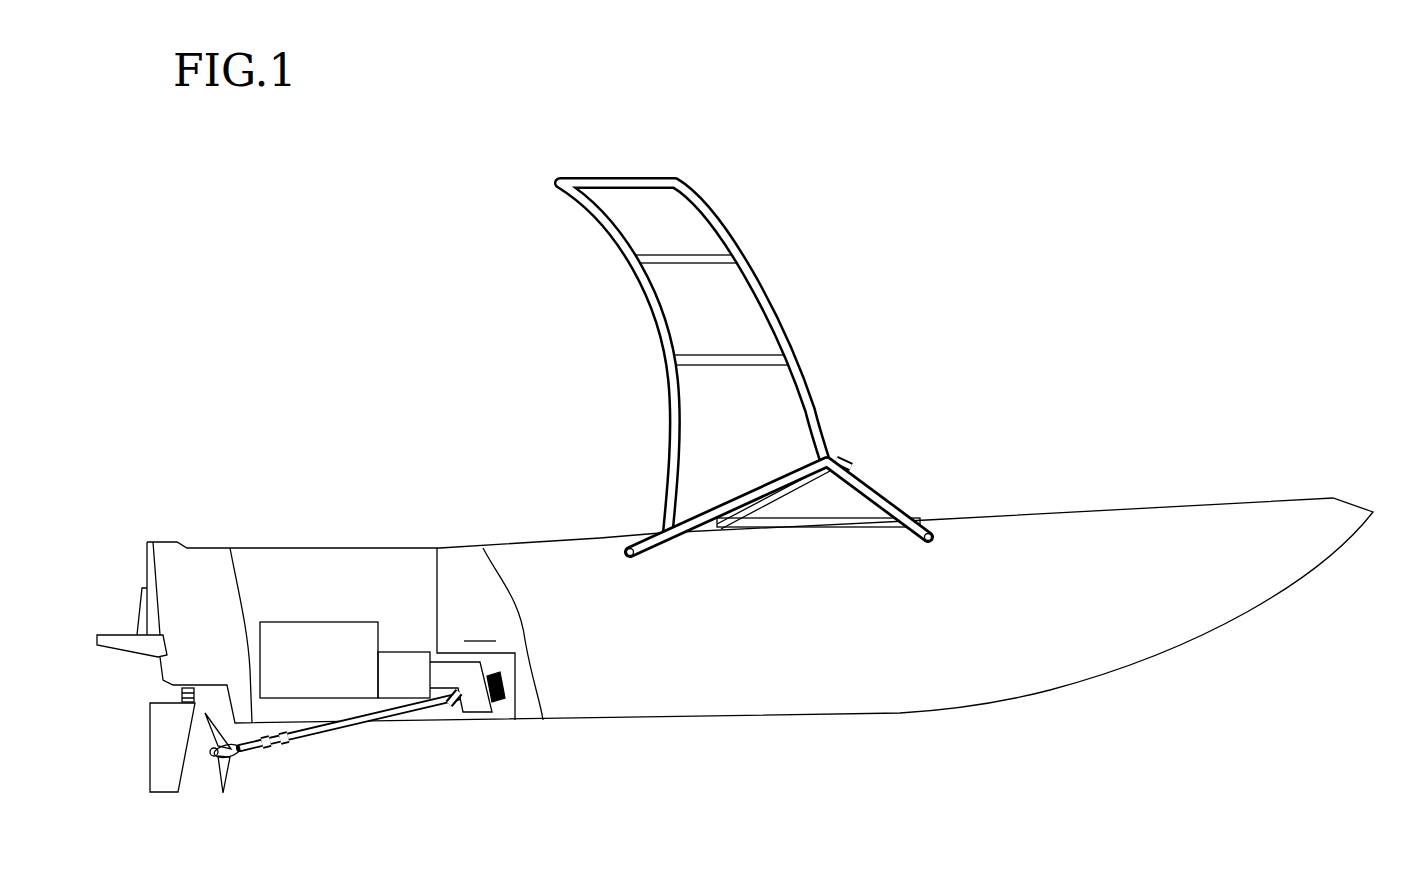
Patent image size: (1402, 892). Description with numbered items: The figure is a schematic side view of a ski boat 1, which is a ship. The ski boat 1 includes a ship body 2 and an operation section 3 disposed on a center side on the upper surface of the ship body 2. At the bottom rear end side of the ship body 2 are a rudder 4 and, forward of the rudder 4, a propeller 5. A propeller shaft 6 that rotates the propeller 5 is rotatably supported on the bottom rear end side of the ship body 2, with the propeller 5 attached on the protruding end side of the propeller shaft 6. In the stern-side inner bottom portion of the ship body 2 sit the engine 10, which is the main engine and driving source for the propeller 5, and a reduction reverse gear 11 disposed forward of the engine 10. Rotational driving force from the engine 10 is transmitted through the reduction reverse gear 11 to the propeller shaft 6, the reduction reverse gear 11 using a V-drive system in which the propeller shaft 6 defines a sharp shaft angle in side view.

The ski boat 1 is at (815, 265).
The ship body 2 is at (945, 685).
The operation section 3 is at (872, 470).
The rudder 4 is at (168, 748).
The propeller 5 is at (223, 760).
The propeller shaft 6 is at (320, 735).
The engine 10 is at (322, 632).
The reduction reverse gear 11 is at (430, 677).